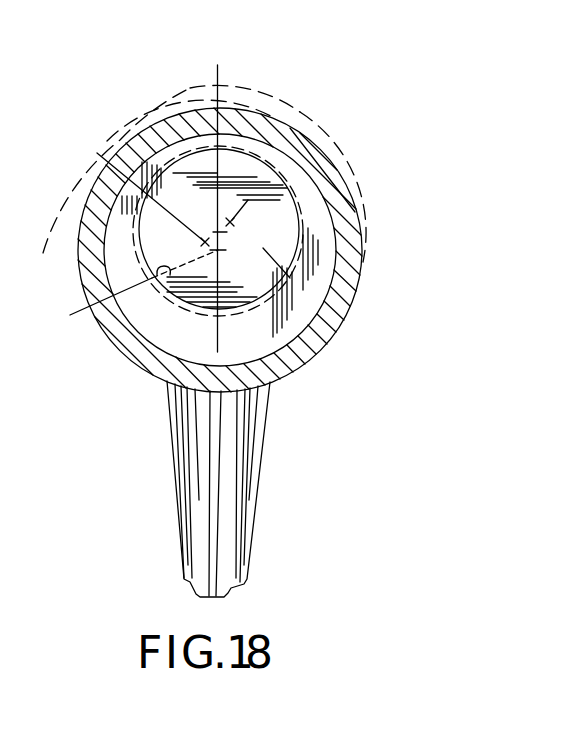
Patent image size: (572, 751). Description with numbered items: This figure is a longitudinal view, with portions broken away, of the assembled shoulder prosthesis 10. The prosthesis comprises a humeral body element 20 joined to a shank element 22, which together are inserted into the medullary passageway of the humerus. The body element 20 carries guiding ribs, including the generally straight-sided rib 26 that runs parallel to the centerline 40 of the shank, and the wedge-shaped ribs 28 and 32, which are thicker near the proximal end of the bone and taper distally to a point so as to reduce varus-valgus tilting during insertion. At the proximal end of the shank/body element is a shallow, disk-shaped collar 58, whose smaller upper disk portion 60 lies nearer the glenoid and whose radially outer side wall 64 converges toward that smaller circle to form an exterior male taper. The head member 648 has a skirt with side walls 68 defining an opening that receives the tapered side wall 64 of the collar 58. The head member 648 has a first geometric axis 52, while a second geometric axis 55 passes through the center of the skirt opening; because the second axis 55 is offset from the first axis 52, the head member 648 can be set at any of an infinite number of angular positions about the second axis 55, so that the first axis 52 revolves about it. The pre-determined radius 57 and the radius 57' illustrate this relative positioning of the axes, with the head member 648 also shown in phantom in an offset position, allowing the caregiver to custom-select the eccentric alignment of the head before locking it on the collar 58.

The shoulder prosthesis 10 is at (98, 523).
The humeral body element 20 is at (177, 547).
The shank element 22 is at (0, 28).
The rib 26 is at (217, 457).
The rib 28 is at (257, 498).
The rib 32 is at (180, 473).
The centerline 40 is at (250, 86).
The first geometric axis 52 is at (234, 222).
The second geometric axis 55 is at (217, 231).
The pre-determined radius 57 is at (159, 164).
The pre-determined radius 57' is at (333, 148).
The disk-shaped collar 58 is at (296, 348).
The upper disk portion 60 is at (203, 302).
The side wall 64 is at (87, 306).
The side walls 68 is at (160, 276).
The head member 648 is at (330, 151).